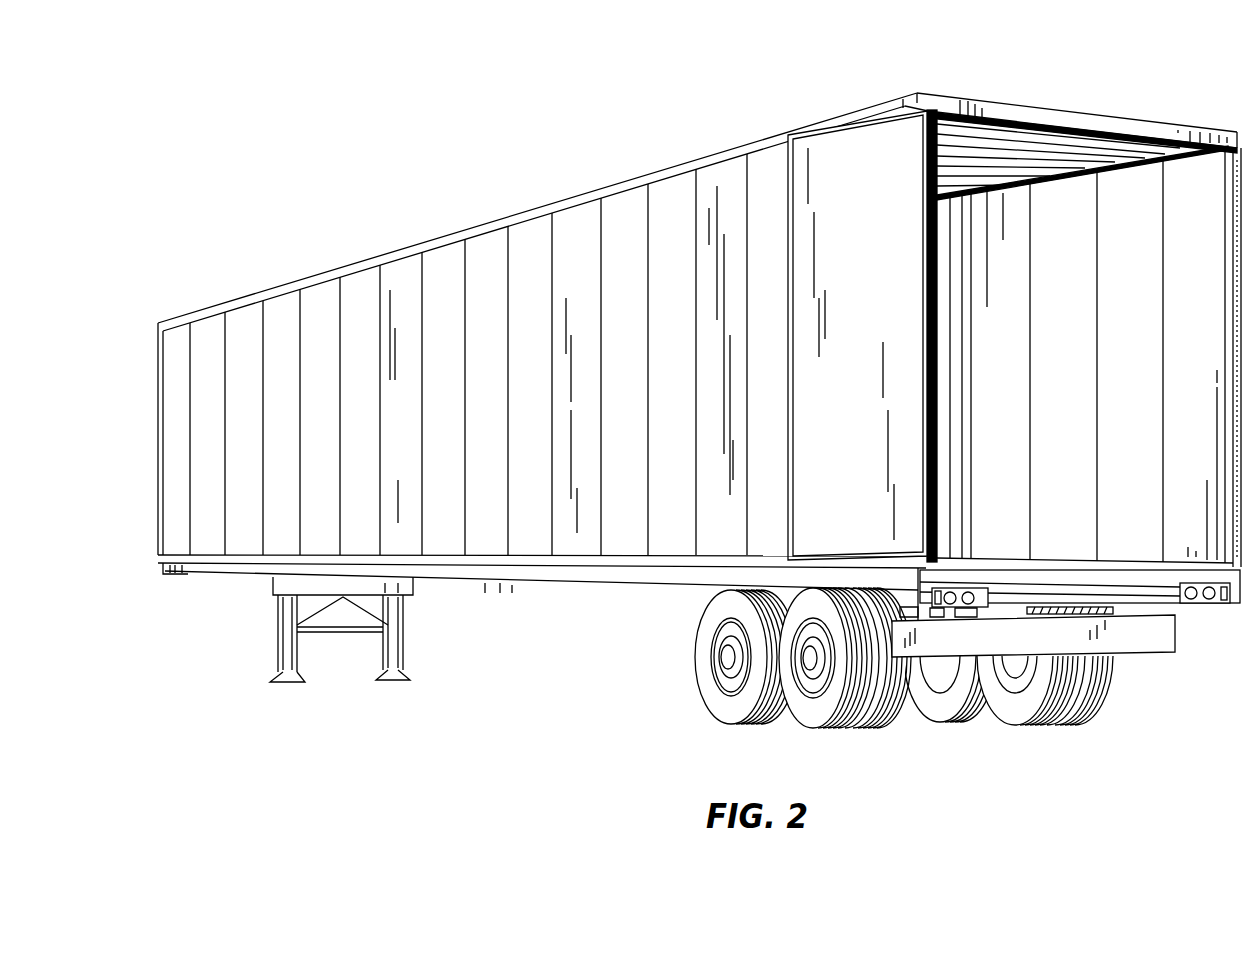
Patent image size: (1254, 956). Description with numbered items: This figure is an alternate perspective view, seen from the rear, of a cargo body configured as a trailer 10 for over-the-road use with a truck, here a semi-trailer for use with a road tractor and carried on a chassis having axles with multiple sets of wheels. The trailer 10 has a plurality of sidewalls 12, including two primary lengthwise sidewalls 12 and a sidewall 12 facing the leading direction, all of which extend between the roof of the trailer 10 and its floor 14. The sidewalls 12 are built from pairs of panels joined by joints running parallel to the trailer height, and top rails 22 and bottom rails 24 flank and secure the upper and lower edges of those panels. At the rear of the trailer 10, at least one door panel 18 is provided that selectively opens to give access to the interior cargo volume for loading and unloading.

The trailer 10 is at (404, 156).
The sidewalls 12 is at (668, 240).
The floor 14 is at (1065, 554).
The door panel 18 is at (857, 421).
The top rails 22 is at (322, 278).
The bottom rails 24 is at (535, 558).